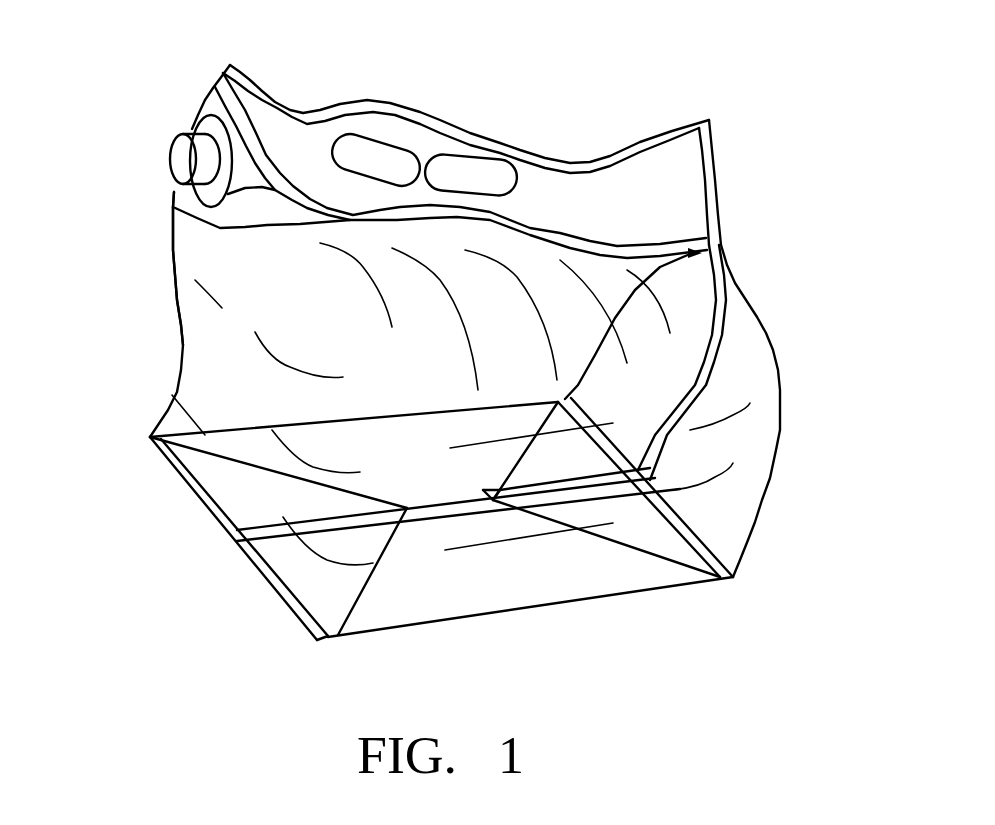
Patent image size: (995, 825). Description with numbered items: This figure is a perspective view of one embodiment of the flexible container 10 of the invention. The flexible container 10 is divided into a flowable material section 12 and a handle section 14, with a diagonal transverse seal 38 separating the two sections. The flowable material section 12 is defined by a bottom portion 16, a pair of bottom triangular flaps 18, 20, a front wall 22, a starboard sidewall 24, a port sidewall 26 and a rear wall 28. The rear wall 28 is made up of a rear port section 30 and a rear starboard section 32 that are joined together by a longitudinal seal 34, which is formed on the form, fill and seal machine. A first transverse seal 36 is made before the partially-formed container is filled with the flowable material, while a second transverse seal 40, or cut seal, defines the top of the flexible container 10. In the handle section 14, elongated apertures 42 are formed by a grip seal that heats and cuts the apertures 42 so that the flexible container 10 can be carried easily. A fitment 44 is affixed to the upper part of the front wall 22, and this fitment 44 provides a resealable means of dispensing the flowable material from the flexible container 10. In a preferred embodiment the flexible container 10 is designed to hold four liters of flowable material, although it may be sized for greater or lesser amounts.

The flexible container 10 is at (128, 182).
The flowable material section 12 is at (792, 341).
The handle section 14 is at (673, 192).
The bottom portion 16 is at (502, 588).
The bottom triangular flap 18 is at (640, 545).
The bottom triangular flap 20 is at (337, 598).
The front wall 22 is at (197, 340).
The starboard sidewall 24 is at (190, 487).
The port sidewall 26 is at (172, 243).
The rear wall 28 is at (778, 301).
The rear port section 30 is at (700, 330).
The rear starboard section 32 is at (767, 432).
The longitudinal seal 34 is at (718, 363).
The first transverse seal 36 is at (627, 497).
The diagonal transverse seal 38 is at (646, 236).
The second transverse seal 40 is at (630, 150).
The elongated apertures 42 is at (475, 173).
The fitment 44 is at (180, 147).